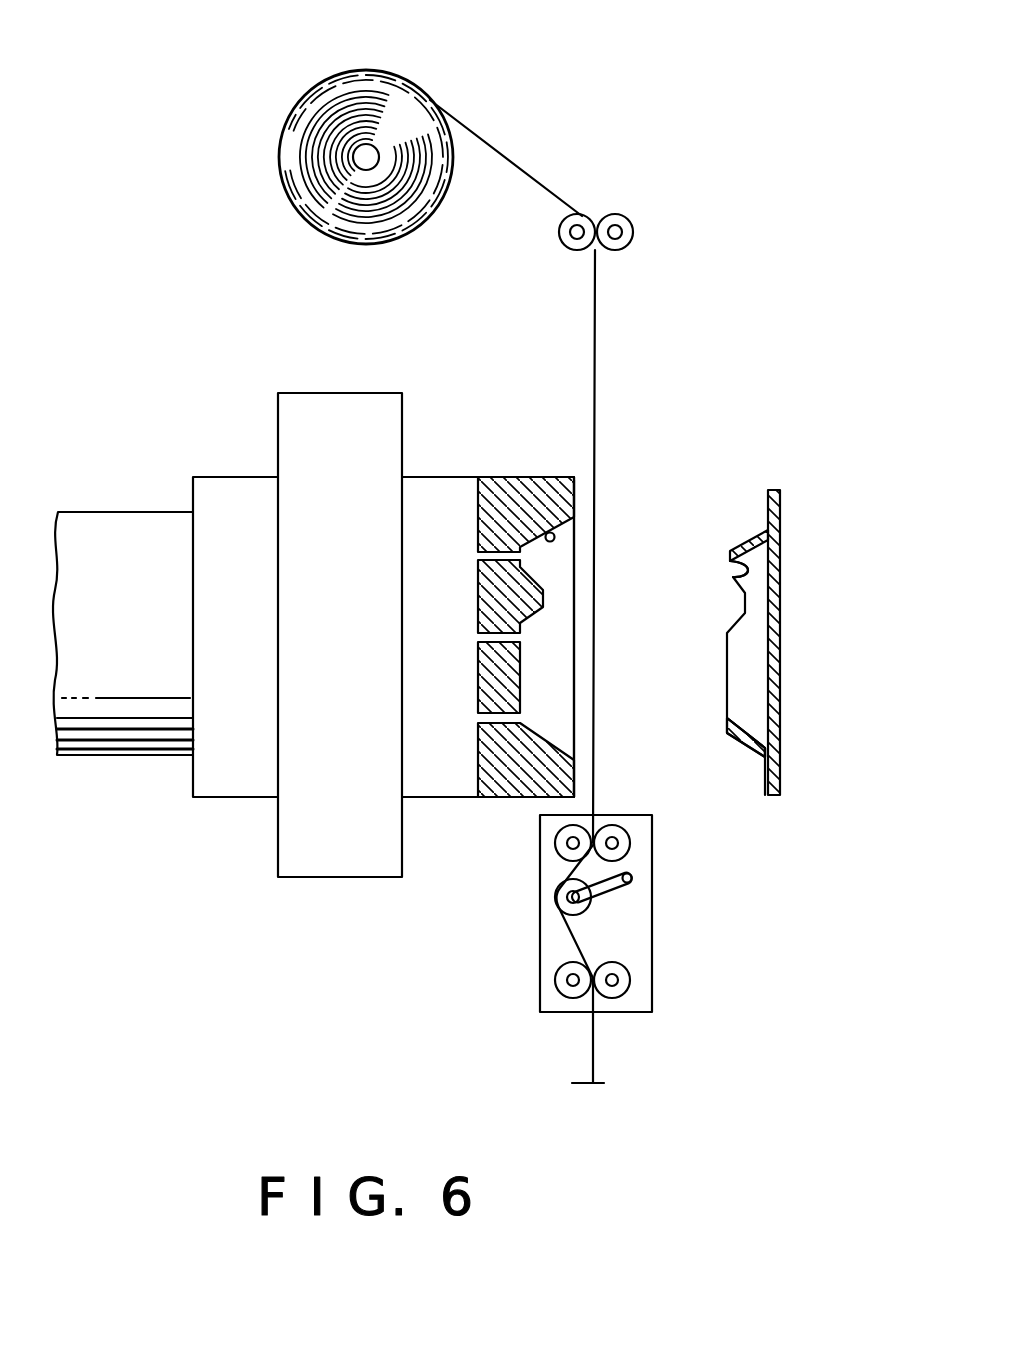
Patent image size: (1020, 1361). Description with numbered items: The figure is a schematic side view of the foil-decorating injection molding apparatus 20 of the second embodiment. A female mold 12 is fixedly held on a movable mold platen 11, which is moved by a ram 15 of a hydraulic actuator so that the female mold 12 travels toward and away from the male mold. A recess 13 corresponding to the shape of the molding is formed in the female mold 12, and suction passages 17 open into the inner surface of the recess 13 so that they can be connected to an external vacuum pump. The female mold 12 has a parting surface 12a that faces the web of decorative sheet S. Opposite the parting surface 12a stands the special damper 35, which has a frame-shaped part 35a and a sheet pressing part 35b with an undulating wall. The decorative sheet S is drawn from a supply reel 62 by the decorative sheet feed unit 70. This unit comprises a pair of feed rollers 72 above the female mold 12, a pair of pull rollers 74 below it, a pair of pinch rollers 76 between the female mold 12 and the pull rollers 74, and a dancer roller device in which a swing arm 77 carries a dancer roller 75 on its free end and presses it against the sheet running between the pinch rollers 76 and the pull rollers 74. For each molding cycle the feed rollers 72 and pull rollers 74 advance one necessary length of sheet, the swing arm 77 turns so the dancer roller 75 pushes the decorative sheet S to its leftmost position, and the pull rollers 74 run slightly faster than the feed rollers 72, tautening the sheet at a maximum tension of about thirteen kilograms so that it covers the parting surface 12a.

The foil-decorating injection molding apparatus 20 is at (198, 117).
The supply reel 62 is at (370, 152).
The feed rollers 72 is at (617, 214).
The decorative sheet S is at (596, 336).
The movable mold platen 11 is at (345, 866).
The female mold 12 is at (438, 490).
The parting surface 12a is at (575, 487).
The recess 13 is at (545, 530).
The suction passages 17 is at (477, 638).
The ram 15 is at (105, 757).
The special damper 35 is at (790, 519).
The frame-shaped part 35a is at (780, 773).
The sheet pressing part 35b is at (727, 577).
The decorative sheet feed unit 70 is at (528, 966).
The pinch rollers 76 is at (557, 840).
The dancer roller 75 is at (590, 915).
The swing arm 77 is at (617, 897).
The pull rollers 74 is at (567, 992).